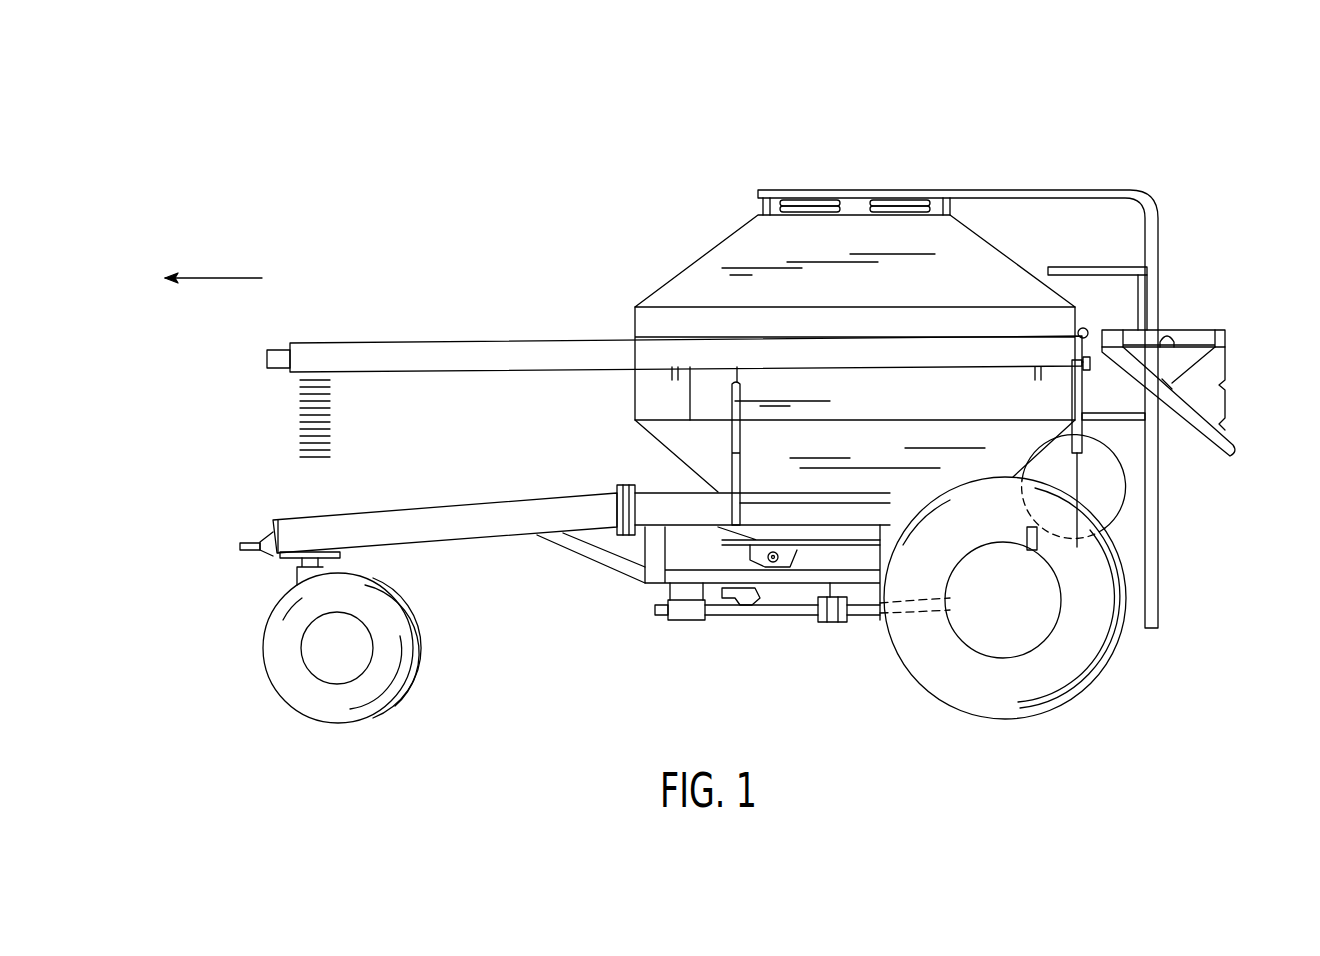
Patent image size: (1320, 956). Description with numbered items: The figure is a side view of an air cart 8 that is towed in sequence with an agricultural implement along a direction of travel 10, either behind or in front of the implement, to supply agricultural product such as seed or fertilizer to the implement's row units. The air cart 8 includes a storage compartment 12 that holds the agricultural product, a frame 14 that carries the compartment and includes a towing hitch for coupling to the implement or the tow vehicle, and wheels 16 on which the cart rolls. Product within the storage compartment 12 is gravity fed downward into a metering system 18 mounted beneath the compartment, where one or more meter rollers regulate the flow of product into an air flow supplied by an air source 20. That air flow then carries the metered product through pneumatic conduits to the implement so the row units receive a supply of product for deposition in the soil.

The air cart 8 is at (698, 148).
The direction of travel 10 is at (220, 278).
The storage compartment 12 is at (737, 250).
The frame 14 is at (445, 508).
The wheels 16 is at (287, 702).
The metering system 18 is at (793, 567).
The air source 20 is at (1103, 480).